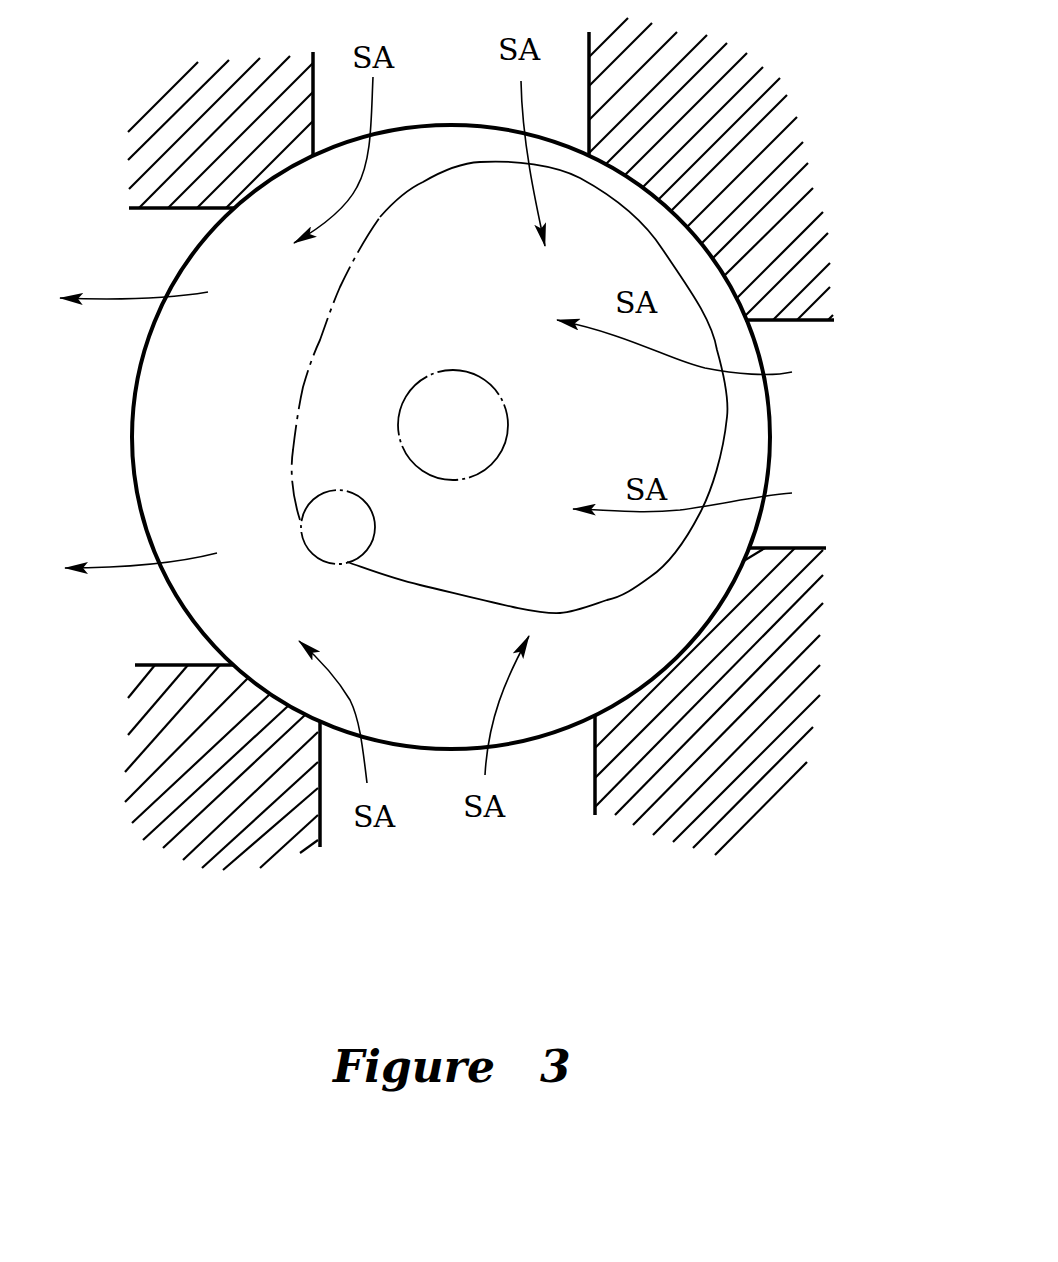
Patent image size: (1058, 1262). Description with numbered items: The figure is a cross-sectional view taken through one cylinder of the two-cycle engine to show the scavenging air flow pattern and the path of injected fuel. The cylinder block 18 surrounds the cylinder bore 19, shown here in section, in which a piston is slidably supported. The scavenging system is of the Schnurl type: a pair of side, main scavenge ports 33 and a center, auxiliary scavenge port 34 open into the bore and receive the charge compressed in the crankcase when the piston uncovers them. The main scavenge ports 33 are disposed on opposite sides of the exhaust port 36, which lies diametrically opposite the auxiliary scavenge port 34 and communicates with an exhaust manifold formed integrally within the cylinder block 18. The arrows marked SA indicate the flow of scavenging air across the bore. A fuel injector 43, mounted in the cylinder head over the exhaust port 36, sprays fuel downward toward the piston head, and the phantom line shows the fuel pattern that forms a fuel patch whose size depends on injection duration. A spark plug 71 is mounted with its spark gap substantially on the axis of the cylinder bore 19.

The cylinder block 18 is at (755, 108).
The cylinder bore 19 is at (682, 647).
The main scavenge port 33 is at (443, 125).
The auxiliary scavenge port 34 is at (769, 438).
The exhaust port 36 is at (133, 448).
The fuel injector 43 is at (335, 515).
The spark plug 71 is at (416, 382).